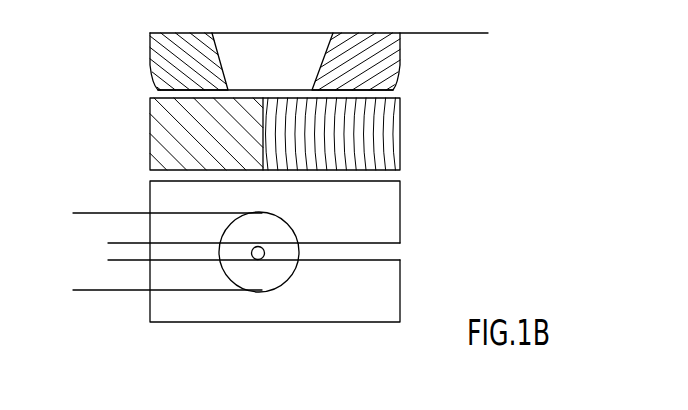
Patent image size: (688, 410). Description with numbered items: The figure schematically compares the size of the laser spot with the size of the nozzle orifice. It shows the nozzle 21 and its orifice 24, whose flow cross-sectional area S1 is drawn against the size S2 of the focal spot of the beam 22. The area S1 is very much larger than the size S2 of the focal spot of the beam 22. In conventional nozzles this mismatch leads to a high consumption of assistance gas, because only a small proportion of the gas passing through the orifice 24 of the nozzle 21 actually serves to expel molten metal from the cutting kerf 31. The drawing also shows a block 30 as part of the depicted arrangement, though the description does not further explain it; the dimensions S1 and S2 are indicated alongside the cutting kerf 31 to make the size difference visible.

The nozzle 21 is at (305, 63).
The beam 22 is at (265, 255).
The orifice 24 is at (298, 223).
The block 30 is at (180, 120).
The cutting kerf 31 is at (375, 135).
The flow cross-sectional area S1 is at (77, 213).
The size of the focal spot S2 is at (117, 225).